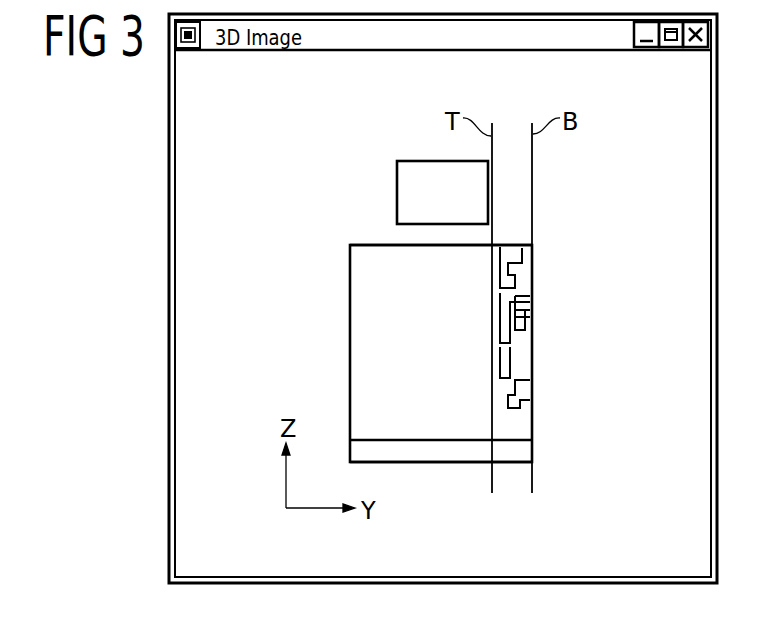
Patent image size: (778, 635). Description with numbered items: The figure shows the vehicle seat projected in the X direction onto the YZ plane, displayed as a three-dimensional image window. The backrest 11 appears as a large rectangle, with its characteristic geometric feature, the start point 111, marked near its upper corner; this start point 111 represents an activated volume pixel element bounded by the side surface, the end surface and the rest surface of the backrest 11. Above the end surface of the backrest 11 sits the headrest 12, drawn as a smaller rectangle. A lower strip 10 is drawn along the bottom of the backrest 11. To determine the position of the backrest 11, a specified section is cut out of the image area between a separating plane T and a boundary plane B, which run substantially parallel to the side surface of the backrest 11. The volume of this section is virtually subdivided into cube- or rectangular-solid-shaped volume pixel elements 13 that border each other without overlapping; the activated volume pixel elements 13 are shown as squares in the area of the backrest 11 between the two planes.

The substrate layer 10 is at (441, 452).
The backrest 11 is at (375, 323).
The start point 111 is at (358, 259).
The headrest 12 is at (410, 189).
The volume pixel elements 13 is at (518, 325).